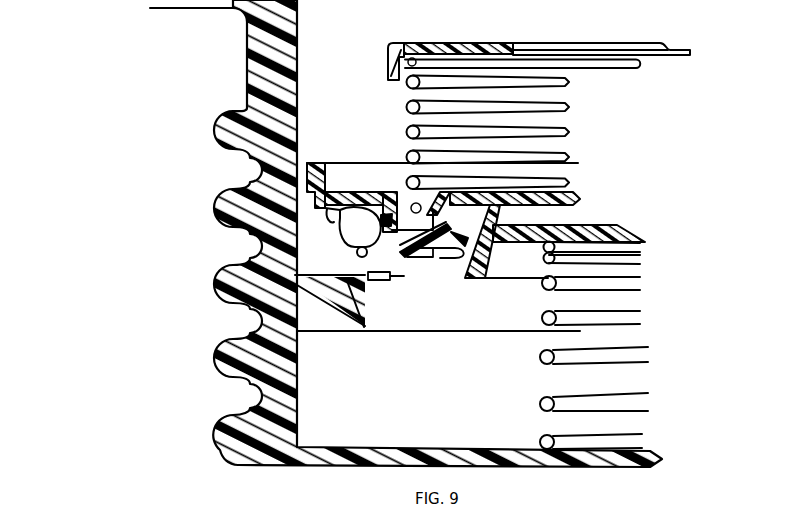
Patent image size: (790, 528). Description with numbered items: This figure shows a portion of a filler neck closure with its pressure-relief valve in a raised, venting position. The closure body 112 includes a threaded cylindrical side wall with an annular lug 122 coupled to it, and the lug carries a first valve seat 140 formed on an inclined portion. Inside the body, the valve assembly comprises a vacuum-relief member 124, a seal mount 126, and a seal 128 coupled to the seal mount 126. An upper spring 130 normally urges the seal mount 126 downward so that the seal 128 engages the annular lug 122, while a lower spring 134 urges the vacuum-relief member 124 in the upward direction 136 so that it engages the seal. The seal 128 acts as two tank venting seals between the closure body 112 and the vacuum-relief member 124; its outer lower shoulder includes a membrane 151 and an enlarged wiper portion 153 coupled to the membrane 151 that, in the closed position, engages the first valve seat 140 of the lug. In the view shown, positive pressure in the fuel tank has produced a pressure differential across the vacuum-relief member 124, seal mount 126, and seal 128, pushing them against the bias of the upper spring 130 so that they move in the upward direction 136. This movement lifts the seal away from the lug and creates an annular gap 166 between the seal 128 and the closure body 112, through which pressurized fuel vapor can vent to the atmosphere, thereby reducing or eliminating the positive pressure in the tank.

The closure body 112 is at (221, 112).
The annular lug 122 is at (305, 300).
The vacuum-relief member 124 is at (583, 237).
The seal mount 126 is at (575, 186).
The seal 128 is at (433, 249).
The upper spring 130 is at (560, 130).
The lower spring 134 is at (622, 313).
The upward direction 136 is at (52, 218).
The first valve seat 140 is at (352, 292).
The membrane 151 is at (374, 263).
The enlarged wiper portion 153 is at (356, 253).
The annular gap 166 is at (372, 292).